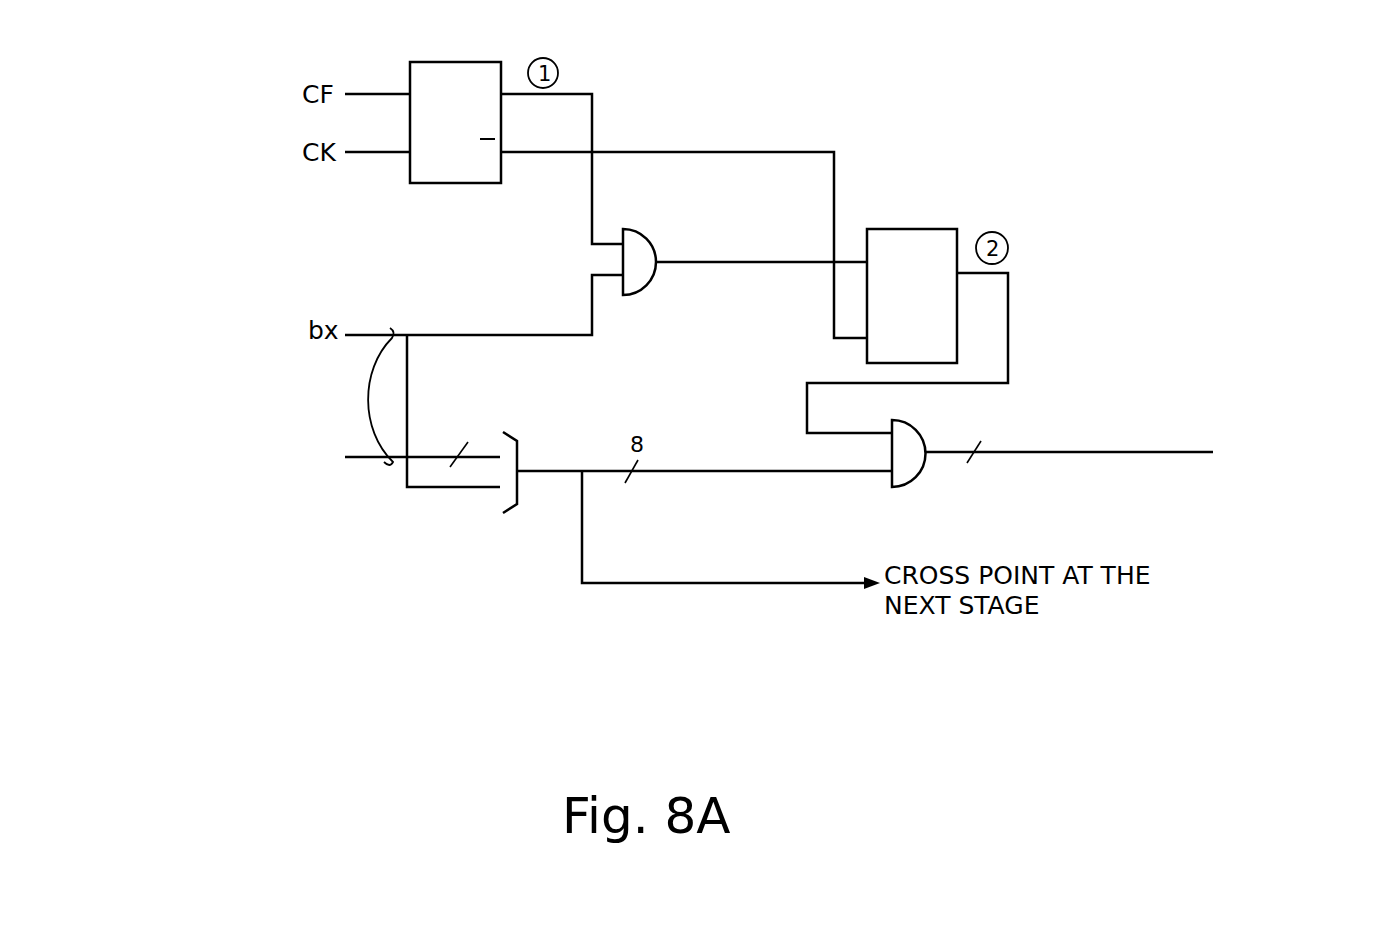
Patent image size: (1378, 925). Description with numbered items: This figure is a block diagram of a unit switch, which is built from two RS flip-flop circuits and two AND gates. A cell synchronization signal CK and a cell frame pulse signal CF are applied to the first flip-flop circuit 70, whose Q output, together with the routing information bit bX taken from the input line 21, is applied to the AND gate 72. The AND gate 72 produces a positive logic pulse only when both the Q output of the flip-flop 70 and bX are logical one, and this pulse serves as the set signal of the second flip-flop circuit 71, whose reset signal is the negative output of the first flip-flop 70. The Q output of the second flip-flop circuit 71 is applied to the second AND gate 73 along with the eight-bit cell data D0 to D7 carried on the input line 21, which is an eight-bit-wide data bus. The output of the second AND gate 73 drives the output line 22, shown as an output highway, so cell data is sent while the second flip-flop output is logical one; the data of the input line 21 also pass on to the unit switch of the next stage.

The flip-flop circuit 70 is at (427, 62).
The second flip-flop circuit 71 is at (890, 229).
The AND gate 72 is at (643, 232).
The second AND gate 73 is at (920, 434).
The input line 21 is at (369, 382).
The output line 22 is at (1053, 452).